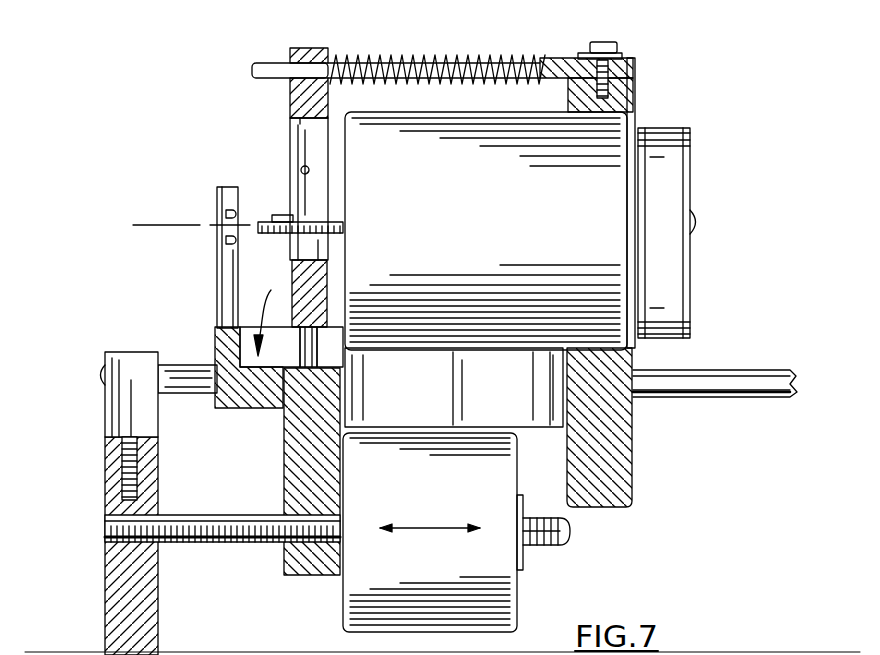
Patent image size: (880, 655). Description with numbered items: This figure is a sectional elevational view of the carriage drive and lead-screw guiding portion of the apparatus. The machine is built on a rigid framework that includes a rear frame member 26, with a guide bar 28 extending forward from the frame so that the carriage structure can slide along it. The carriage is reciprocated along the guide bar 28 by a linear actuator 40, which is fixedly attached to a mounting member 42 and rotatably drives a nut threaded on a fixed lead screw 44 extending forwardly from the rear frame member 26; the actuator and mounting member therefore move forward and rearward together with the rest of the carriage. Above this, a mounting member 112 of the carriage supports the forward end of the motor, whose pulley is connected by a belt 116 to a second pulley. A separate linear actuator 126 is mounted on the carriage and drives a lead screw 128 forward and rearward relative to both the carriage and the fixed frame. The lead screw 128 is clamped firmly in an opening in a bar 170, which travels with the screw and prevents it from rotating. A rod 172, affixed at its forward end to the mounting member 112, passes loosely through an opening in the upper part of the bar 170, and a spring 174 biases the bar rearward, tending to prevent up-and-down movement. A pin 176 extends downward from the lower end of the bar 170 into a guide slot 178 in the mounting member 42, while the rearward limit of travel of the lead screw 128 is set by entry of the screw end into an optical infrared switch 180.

The rear frame member 26 is at (110, 592).
The guide bar 28 is at (746, 398).
The linear actuator 40 is at (345, 600).
The mounting member 42 is at (300, 476).
The fixed lead screw 44 is at (242, 545).
The mounting member 112 is at (640, 85).
The belt 116 is at (660, 145).
The linear actuator 126 is at (431, 347).
The lead screw 128 is at (283, 214).
The bar 170 is at (312, 47).
The rod 172 is at (268, 64).
The spring 174 is at (464, 66).
The pin 176 is at (300, 358).
The guide slot 178 is at (258, 311).
The optical (IR) switch 180 is at (218, 246).